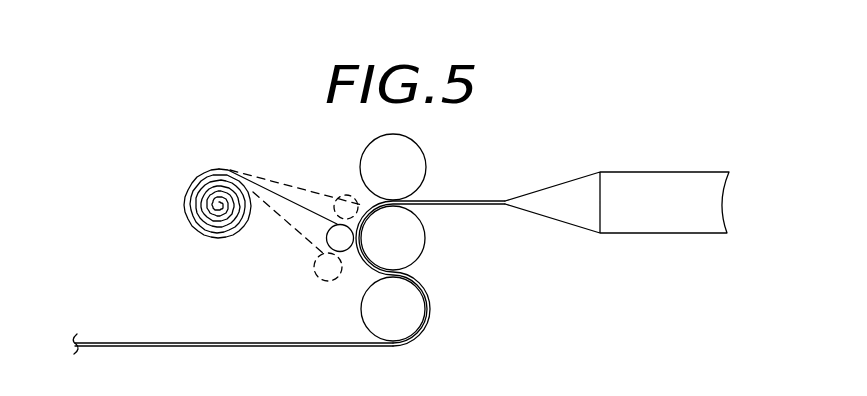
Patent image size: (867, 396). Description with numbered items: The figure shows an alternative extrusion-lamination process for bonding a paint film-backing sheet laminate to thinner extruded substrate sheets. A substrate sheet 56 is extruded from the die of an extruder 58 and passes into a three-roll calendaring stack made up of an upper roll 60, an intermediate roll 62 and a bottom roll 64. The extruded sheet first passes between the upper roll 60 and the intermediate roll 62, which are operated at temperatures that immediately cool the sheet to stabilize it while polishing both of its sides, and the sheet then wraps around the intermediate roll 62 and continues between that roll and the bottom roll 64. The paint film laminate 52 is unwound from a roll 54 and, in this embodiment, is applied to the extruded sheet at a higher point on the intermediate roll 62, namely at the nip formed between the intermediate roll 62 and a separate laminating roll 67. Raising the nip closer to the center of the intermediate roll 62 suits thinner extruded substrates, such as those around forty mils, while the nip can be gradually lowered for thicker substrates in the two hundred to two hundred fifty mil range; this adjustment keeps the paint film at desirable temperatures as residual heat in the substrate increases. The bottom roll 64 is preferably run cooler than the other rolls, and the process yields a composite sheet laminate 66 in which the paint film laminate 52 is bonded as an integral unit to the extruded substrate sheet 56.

The paint film laminate 52 is at (272, 193).
The roll 54 is at (217, 227).
The thick substrate sheet 56 is at (462, 200).
The extruder 58 is at (633, 172).
The upper roll 60 is at (408, 165).
The intermediate roll 62 is at (410, 245).
The bottom roll 64 is at (410, 298).
The composite thick sheet laminate 66 is at (112, 338).
The laminating roll 67 is at (340, 224).